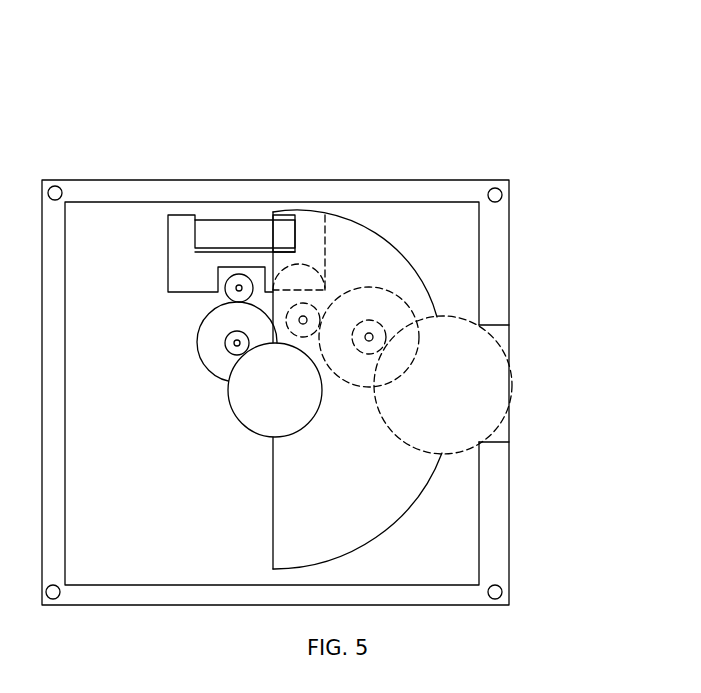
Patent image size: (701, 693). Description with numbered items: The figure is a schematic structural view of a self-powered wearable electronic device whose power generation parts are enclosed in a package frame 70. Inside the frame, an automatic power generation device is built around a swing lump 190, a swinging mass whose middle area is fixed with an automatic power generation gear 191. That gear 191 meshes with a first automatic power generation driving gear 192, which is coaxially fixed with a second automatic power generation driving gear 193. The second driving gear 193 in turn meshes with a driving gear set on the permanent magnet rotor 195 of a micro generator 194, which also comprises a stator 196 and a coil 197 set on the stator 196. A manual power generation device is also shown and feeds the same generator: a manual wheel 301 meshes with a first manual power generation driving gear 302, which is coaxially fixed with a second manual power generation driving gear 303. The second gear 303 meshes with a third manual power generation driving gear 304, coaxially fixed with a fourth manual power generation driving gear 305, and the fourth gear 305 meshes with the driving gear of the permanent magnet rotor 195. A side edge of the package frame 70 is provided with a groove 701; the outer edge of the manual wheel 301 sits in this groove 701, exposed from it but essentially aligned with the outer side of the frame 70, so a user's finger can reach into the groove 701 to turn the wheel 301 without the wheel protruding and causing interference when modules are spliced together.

The package frame 70 is at (497, 283).
The groove 701 is at (503, 340).
The swing lump 190 is at (287, 515).
The automatic power generation gear 191 is at (250, 412).
The first automatic power generation driving gear 192 is at (225, 344).
The second automatic power generation driving gear 193 is at (205, 358).
The micro generator 194 is at (297, 103).
The permanent magnet rotor 195 is at (229, 279).
The stator 196 is at (172, 213).
The coil 197 is at (207, 240).
The manual wheel 301 is at (497, 400).
The first manual power generation driving gear 302 is at (385, 327).
The second manual power generation driving gear 303 is at (378, 295).
The third manual power generation driving gear 304 is at (315, 310).
The fourth manual power generation driving gear 305 is at (325, 277).